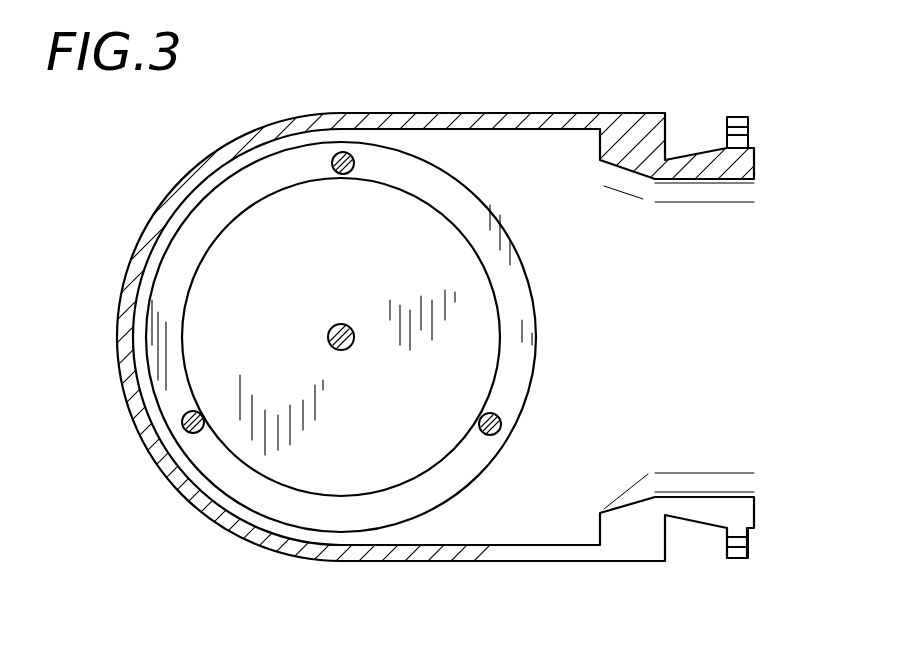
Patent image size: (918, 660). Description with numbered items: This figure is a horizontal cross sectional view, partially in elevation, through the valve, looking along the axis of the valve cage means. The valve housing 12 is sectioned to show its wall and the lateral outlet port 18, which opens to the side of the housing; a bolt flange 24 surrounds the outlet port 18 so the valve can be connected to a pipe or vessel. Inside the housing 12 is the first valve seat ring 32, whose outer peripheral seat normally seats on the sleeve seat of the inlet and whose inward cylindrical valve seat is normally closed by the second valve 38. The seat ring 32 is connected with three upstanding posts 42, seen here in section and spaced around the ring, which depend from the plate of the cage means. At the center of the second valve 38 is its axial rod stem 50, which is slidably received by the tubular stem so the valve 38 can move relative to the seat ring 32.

The valve housing 12 is at (465, 110).
The lateral outlet port 18 is at (723, 182).
The bolt flange 24 is at (742, 114).
The first valve seat ring 32 is at (480, 182).
The second valve 38 is at (356, 282).
The upstanding post 42 is at (343, 152).
The axial rod stem 50 is at (330, 327).